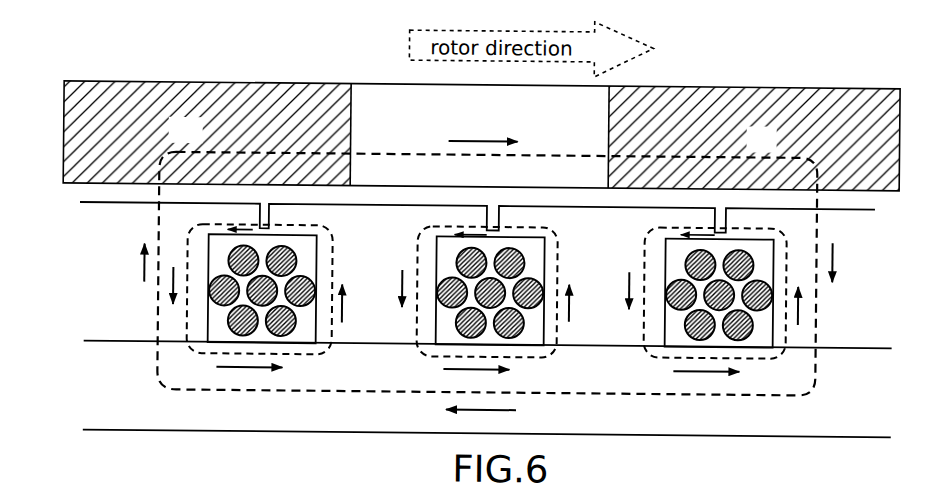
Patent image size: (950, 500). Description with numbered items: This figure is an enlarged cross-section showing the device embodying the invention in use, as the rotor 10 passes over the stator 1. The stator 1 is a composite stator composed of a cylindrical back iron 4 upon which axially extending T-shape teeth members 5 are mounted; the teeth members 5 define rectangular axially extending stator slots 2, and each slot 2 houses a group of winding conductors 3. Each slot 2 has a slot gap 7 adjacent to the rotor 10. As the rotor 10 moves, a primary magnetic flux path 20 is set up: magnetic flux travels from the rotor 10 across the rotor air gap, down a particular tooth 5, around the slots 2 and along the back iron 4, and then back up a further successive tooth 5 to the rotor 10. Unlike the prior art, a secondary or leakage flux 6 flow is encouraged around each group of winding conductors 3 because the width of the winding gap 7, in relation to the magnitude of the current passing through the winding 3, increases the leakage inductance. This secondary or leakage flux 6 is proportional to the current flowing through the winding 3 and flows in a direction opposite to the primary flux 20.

The rotor 10 is at (808, 74).
The stator 1 is at (506, 320).
The stator slot 2 is at (547, 333).
The winding conductor 3 is at (457, 321).
The back iron 4 is at (487, 389).
The tooth member 5 is at (101, 294).
The secondary or leakage flux 6 is at (655, 233).
The slot gap 7 is at (467, 214).
The primary magnetic flux path 20 is at (808, 383).